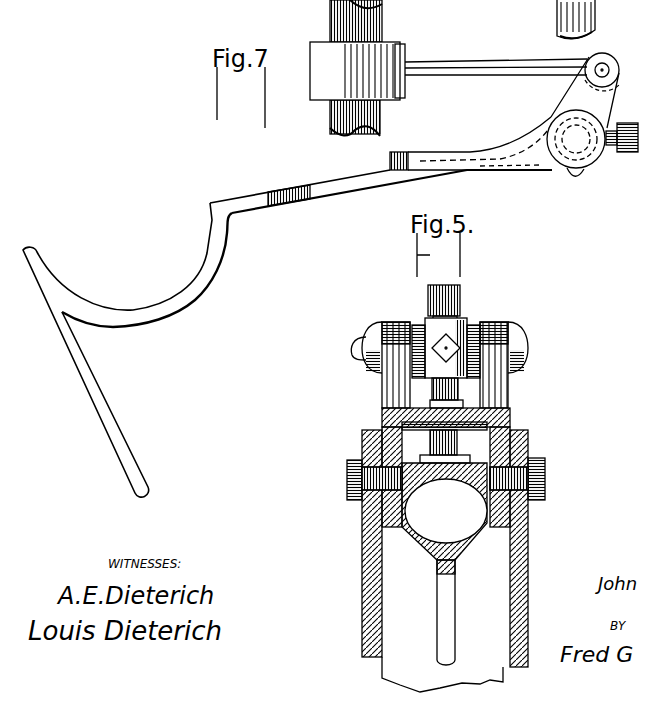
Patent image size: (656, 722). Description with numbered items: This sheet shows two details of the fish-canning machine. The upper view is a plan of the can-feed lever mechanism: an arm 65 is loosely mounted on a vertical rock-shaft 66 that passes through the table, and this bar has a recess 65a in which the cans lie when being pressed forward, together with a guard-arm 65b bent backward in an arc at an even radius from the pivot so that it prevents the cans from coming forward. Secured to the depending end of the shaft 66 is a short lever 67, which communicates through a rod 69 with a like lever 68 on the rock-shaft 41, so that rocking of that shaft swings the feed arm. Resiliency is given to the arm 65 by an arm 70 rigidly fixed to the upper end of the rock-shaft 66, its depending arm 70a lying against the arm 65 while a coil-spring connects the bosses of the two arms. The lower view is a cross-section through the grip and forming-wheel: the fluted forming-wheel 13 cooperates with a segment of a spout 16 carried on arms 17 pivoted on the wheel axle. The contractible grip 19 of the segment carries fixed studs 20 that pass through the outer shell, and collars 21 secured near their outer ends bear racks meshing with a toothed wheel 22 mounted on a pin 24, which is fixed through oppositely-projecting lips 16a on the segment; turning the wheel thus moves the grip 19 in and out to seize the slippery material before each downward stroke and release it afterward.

In FIG. 5, the fluted forming-wheel 13 is at (428, 546).
In FIG. 5, the segment of a spout 16 is at (510, 398).
In FIG. 5, the oppositely-projecting lips 16a is at (500, 323).
In FIG. 5, the arms 17 is at (445, 561).
In FIG. 5, the grip 19 is at (444, 511).
In FIG. 5, the fixed studs 20 is at (444, 420).
In FIG. 5, the collars 21 is at (468, 324).
In FIG. 5, the toothed wheel 22 is at (457, 298).
In FIG. 5, the pin 24 is at (346, 348).
In FIG. 7, the rock-shaft 41 is at (356, 68).
In FIG. 7, the arm 65 is at (302, 190).
In FIG. 7, the recess 65a is at (134, 275).
In FIG. 7, the guard-arm 65b is at (100, 380).
In FIG. 7, the vertical rock-shaft 66 is at (576, 143).
In FIG. 7, the short lever 67 is at (594, 102).
In FIG. 7, the lever 68 is at (357, 71).
In FIG. 7, the rod 69 is at (468, 66).
In FIG. 7, the arm 70 is at (519, 160).
In FIG. 7, the depending arm 70a is at (384, 159).